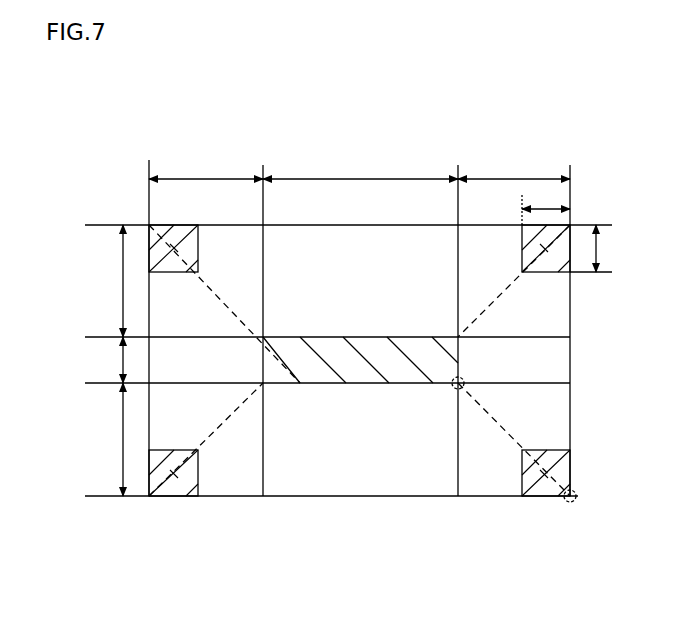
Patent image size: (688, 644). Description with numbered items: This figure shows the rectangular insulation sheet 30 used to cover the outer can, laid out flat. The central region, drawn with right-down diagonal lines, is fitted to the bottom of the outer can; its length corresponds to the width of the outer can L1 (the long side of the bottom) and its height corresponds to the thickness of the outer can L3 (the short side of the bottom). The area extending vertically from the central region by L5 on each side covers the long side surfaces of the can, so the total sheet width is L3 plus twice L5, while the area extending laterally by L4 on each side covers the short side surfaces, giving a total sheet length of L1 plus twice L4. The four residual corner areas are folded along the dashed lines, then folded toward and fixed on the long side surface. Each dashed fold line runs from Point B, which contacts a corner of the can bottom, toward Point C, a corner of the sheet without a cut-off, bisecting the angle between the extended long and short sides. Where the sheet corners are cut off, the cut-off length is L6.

The insulation sheet 30 is at (121, 163).
The Point B is at (458, 386).
The Point C is at (572, 502).
The width of the outer can L1 is at (360, 166).
The thickness of the outer can L3 is at (105, 360).
The lateral extension length of the insulation sheet L4 is at (359, 166).
The vertical extension length of the insulation sheet L5 is at (105, 360).
The length of the cut-off region L6 is at (574, 230).